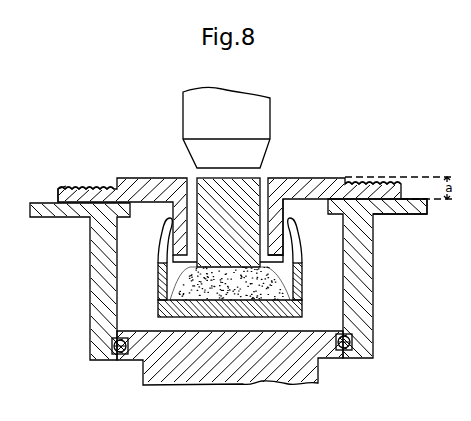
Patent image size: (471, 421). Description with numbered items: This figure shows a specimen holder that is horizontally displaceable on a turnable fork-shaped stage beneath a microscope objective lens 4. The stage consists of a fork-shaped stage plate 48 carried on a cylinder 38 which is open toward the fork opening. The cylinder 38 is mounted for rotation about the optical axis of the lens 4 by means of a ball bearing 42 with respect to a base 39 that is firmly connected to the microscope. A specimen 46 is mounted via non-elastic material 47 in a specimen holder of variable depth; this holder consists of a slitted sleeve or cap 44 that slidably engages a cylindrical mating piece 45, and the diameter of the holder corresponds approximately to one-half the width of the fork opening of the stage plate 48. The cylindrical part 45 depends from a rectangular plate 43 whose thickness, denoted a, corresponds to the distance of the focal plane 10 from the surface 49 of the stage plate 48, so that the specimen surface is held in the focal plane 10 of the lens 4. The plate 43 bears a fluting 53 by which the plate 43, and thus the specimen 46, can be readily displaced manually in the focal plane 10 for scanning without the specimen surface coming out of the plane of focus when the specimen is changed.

The microscope objective lens 4 is at (254, 118).
The focal plane 10 is at (413, 177).
The cylinder 38 is at (366, 297).
The base 39 is at (248, 371).
The ball bearing 42 is at (338, 352).
The rectangular plate 43 is at (58, 195).
The slitted sleeve or cap 44 is at (304, 298).
The cylindrical mating piece 45 is at (285, 210).
The specimen 46 is at (258, 180).
The non-elastic material 47 is at (187, 278).
The fork-shaped stage plate 48 is at (390, 211).
The surface of the stage plate 49 is at (40, 203).
The fluting 53 is at (98, 188).